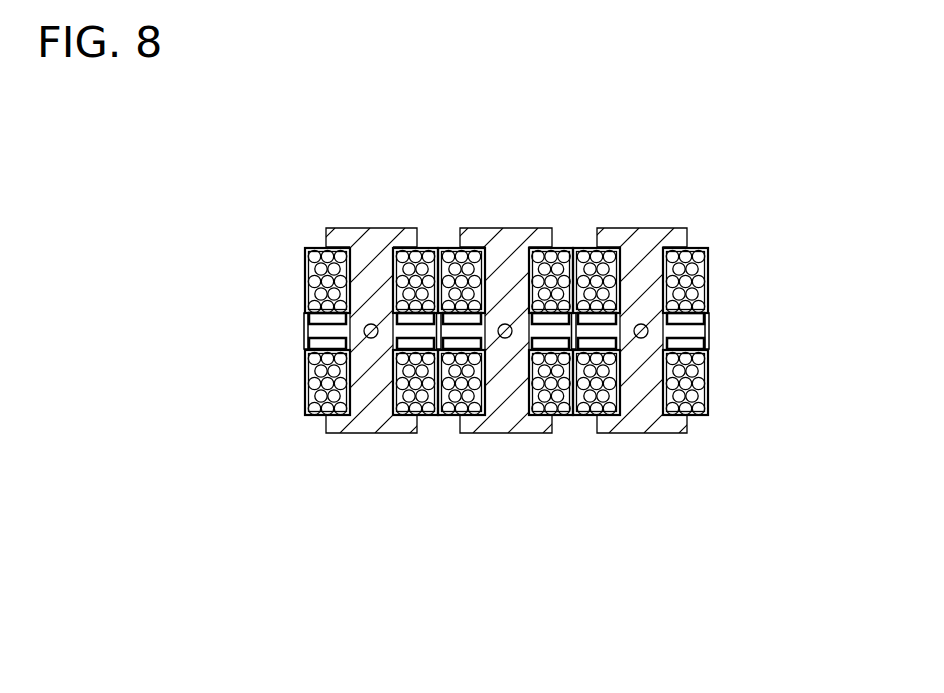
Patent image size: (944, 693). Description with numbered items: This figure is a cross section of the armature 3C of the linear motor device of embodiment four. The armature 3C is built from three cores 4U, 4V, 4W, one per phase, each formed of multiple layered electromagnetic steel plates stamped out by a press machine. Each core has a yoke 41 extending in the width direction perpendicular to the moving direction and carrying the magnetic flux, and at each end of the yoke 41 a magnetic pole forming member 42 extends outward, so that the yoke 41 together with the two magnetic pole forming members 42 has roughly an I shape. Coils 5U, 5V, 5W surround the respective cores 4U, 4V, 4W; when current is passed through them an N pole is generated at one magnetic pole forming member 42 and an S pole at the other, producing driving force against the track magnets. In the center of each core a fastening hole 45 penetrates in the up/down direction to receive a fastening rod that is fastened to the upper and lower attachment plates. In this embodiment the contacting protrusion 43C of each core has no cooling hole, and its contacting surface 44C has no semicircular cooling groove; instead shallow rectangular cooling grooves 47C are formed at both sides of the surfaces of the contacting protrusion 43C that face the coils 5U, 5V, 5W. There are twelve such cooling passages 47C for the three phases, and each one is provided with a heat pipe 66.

The armature 3C is at (754, 174).
The yoke 41 is at (362, 288).
The magnetic pole forming member 42 is at (340, 240).
The contacting protrusion 43C is at (303, 332).
The contacting surface 44C is at (303, 318).
The fastening hole 45 is at (370, 342).
The cooling groove 47C is at (303, 340).
The core 4U is at (373, 421).
The core 4V is at (507, 421).
The core 4W is at (642, 433).
The coil 5U is at (303, 392).
The coil 5V is at (460, 393).
The coil 5W is at (600, 410).
The heat pipe 66 is at (395, 316).